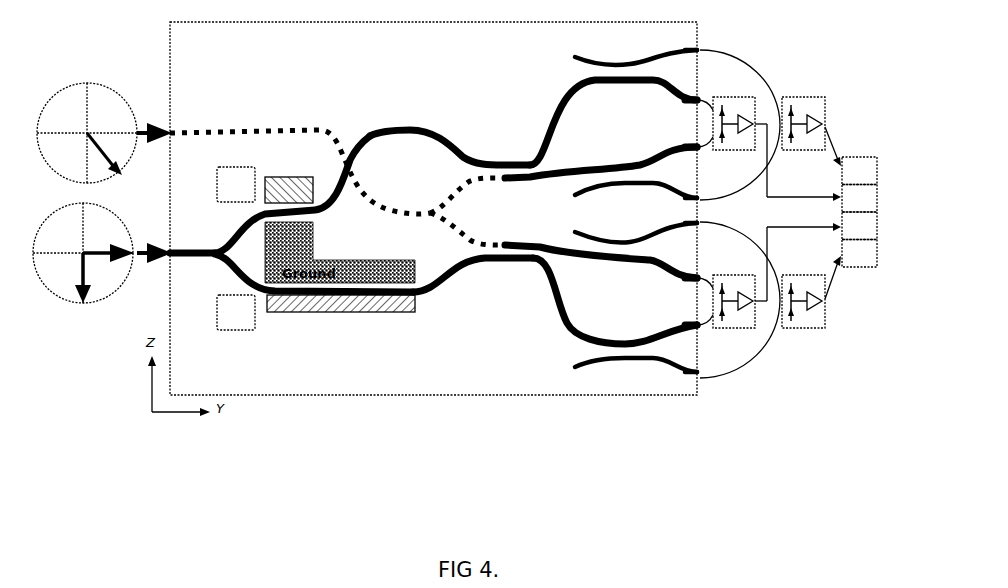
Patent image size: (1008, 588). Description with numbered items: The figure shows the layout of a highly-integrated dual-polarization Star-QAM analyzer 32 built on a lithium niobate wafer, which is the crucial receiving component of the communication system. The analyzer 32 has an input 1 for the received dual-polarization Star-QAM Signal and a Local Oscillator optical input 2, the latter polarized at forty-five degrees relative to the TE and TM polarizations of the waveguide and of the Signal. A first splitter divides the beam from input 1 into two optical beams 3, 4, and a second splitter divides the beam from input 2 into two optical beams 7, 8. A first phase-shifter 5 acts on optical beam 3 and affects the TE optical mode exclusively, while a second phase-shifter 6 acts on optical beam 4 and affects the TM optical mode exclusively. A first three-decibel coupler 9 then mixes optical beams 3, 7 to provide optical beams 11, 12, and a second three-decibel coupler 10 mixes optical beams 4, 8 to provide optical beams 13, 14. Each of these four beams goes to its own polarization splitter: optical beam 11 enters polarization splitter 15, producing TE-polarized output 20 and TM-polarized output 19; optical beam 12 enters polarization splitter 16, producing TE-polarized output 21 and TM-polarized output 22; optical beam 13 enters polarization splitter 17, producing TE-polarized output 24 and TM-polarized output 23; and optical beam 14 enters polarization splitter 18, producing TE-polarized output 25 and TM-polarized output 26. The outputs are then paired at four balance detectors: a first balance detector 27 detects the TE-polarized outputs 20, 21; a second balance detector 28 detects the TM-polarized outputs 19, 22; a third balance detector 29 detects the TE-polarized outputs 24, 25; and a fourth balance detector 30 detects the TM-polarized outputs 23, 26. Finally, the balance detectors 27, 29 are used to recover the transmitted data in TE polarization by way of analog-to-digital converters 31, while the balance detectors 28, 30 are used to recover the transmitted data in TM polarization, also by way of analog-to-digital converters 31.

The input 1 is at (137, 290).
The Local Oscillator optical input 2 is at (140, 128).
The optical beam 3 is at (227, 245).
The optical beam 4 is at (230, 263).
The first phase-shifter 5 is at (241, 178).
The second phase-shifter 6 is at (282, 305).
The optical beam 7 is at (453, 192).
The optical beam 8 is at (455, 238).
The first 3 dB coupler 9 is at (507, 183).
The second 3 dB coupler 10 is at (507, 243).
The optical beam 11 is at (561, 118).
The optical beam 12 is at (548, 183).
The optical beam 13 is at (558, 245).
The optical beam 14 is at (553, 305).
The polarization splitter 15 is at (629, 40).
The polarization splitter 16 is at (626, 187).
The polarization splitter 17 is at (633, 218).
The polarization splitter 18 is at (637, 318).
The TM-polarized output 19 is at (690, 46).
The TE-polarized output 20 is at (690, 92).
The TE-polarized output 21 is at (691, 146).
The TM-polarized output 22 is at (691, 188).
The TM-polarized output 23 is at (691, 223).
The TE-polarized output 24 is at (690, 271).
The TE-polarized output 25 is at (690, 325).
The TM-polarized output 26 is at (691, 368).
The first balance detector 27 is at (746, 95).
The second balance detector 28 is at (813, 97).
The third balance detector 29 is at (747, 333).
The fourth balance detector 30 is at (813, 328).
The analog-to-digital converters 31 is at (897, 157).
The analyzer 32 is at (433, 208).